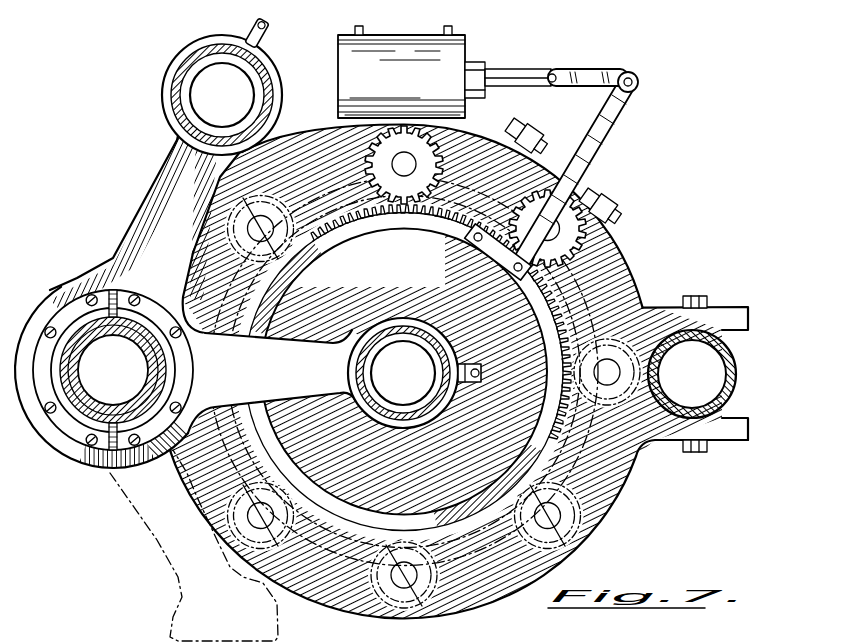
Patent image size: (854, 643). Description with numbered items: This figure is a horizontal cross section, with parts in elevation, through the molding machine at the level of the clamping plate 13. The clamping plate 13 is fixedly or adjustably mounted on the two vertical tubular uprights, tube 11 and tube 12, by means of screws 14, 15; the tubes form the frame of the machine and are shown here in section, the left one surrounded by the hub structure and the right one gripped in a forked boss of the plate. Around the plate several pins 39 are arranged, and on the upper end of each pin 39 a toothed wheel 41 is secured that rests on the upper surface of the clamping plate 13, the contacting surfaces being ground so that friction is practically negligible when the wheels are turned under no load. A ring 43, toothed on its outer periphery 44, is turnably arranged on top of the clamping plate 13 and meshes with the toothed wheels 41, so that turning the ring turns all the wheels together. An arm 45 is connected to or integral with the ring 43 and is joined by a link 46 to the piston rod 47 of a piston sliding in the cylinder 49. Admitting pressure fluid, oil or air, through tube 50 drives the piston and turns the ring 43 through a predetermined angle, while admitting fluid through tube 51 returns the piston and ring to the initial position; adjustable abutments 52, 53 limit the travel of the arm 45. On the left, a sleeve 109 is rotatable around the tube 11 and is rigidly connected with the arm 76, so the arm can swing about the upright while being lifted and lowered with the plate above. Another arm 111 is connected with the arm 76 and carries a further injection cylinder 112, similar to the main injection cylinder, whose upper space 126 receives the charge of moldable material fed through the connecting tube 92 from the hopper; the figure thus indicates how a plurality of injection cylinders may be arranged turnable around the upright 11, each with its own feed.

The tube 11 is at (104, 382).
The tube 12 is at (735, 381).
The clamping plate 13 is at (617, 262).
The screw 14 is at (694, 452).
The screw 15 is at (706, 296).
The pin 39 is at (416, 163).
The toothed wheel 41 is at (435, 148).
The ring 43 is at (384, 222).
The toothed outer periphery 44 is at (362, 200).
The arm 45 is at (604, 139).
The link 46 is at (588, 71).
The piston rod 47 is at (503, 69).
The cylinder 49 is at (356, 80).
The tube 50 is at (453, 32).
The tube 51 is at (364, 32).
The abutment 52 is at (526, 128).
The abutment 53 is at (616, 209).
The arm 76 is at (238, 391).
The connecting tube 92 is at (250, 31).
The sleeve 109 is at (72, 410).
The arm 111 is at (150, 212).
The cylinder 112 is at (178, 104).
The space 126 is at (208, 107).